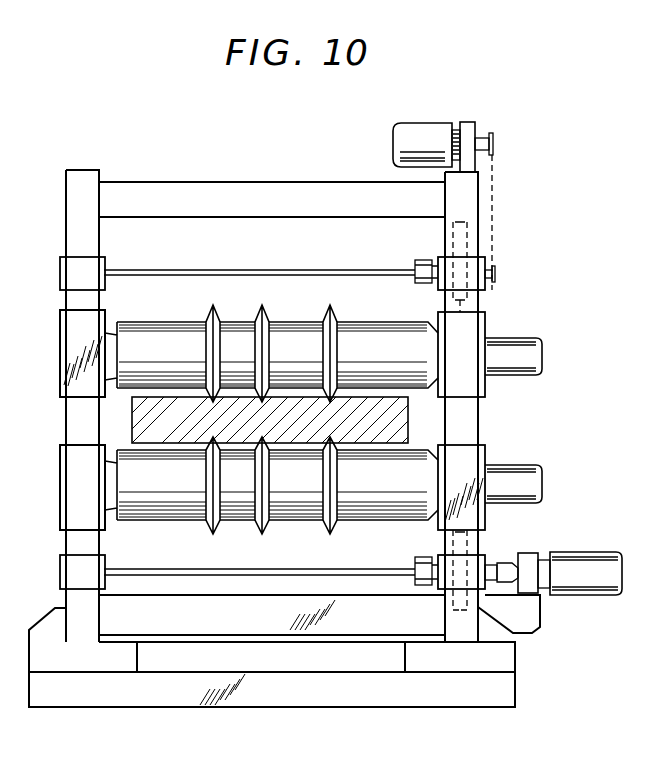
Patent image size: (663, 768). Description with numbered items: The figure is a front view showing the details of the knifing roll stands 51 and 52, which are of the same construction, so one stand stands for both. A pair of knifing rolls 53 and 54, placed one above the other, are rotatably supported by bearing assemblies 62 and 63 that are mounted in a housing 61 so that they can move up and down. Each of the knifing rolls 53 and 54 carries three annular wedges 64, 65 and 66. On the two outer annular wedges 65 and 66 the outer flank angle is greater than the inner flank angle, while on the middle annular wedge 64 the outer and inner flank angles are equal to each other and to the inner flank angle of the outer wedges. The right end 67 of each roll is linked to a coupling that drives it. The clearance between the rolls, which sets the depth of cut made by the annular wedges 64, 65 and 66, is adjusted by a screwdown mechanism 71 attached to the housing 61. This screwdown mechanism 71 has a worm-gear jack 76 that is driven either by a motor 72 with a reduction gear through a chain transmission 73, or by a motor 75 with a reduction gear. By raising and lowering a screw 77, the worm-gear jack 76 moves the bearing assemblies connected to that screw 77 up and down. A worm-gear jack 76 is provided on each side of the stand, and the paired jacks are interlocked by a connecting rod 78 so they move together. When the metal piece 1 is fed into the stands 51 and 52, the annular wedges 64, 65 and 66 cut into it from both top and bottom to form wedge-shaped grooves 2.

The metal piece 1 is at (285, 407).
The wedge-shaped grooves 2 is at (345, 388).
The knifing roll stand 51 is at (526, 407).
The knifing roll stand 52 is at (526, 407).
The knifing roll 53 is at (271, 336).
The knifing roll 54 is at (385, 515).
The housing 61 is at (300, 190).
The bearing assembly 62 is at (473, 328).
The bearing assembly 63 is at (476, 456).
The annular wedge 64 is at (264, 315).
The annular wedge 65 is at (210, 315).
The annular wedge 66 is at (333, 315).
The right end of the roll 67 is at (530, 353).
The screwdown mechanism 71 is at (526, 407).
The motor 72 is at (428, 133).
The chain transmission 73 is at (493, 178).
The motor 75 is at (604, 560).
The worm-gear jack 76 is at (60, 283).
The screw 77 is at (470, 226).
The connecting rod 78 is at (335, 270).